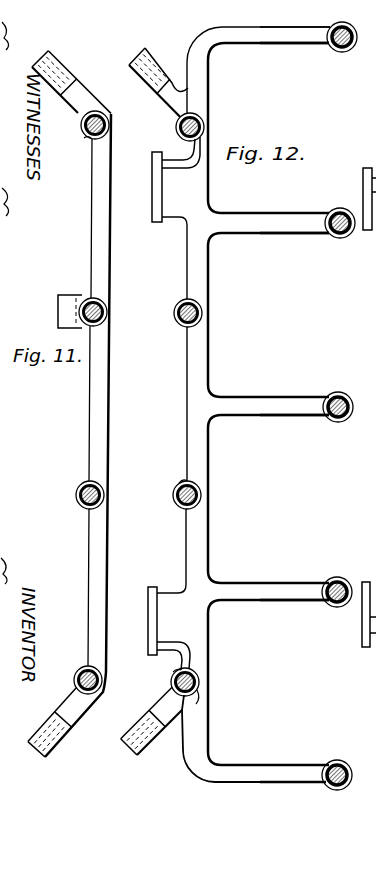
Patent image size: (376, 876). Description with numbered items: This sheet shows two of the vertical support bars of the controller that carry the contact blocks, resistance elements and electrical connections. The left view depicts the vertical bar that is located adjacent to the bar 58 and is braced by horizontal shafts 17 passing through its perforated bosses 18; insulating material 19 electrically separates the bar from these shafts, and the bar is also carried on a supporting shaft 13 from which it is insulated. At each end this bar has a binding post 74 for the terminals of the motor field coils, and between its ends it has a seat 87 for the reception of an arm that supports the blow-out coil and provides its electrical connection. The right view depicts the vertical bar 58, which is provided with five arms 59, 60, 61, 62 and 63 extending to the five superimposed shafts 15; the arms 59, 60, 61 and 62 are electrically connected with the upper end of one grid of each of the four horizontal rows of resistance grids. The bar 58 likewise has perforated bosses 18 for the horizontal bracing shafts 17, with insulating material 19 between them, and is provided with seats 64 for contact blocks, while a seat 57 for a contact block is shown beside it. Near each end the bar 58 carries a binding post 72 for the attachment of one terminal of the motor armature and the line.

In FIG. 11, the supporting shaft 13 is at (111, 416).
In FIG. 12, the superimposed shaft 15 is at (345, 52).
In FIG. 11, the horizontal shaft 17 is at (110, 126).
In FIG. 12, the horizontal shaft 17 is at (204, 125).
In FIG. 12, the perforated boss 18 is at (199, 700).
In FIG. 11, the insulating material 19 is at (88, 141).
In FIG. 12, the insulating material 19 is at (181, 482).
In FIG. 12, the seat for contact block 57 is at (366, 168).
In FIG. 12, the vertical bar 58 is at (208, 362).
In FIG. 12, the arm 59 is at (295, 43).
In FIG. 12, the arm 60 is at (283, 233).
In FIG. 12, the arm 61 is at (283, 415).
In FIG. 12, the arm 62 is at (270, 601).
In FIG. 12, the arm 63 is at (286, 769).
In FIG. 12, the seat for contact block 64 is at (156, 223).
In FIG. 12, the binding post 72 is at (165, 62).
In FIG. 11, the binding post 74 is at (68, 71).
In FIG. 11, the seat 87 is at (58, 297).